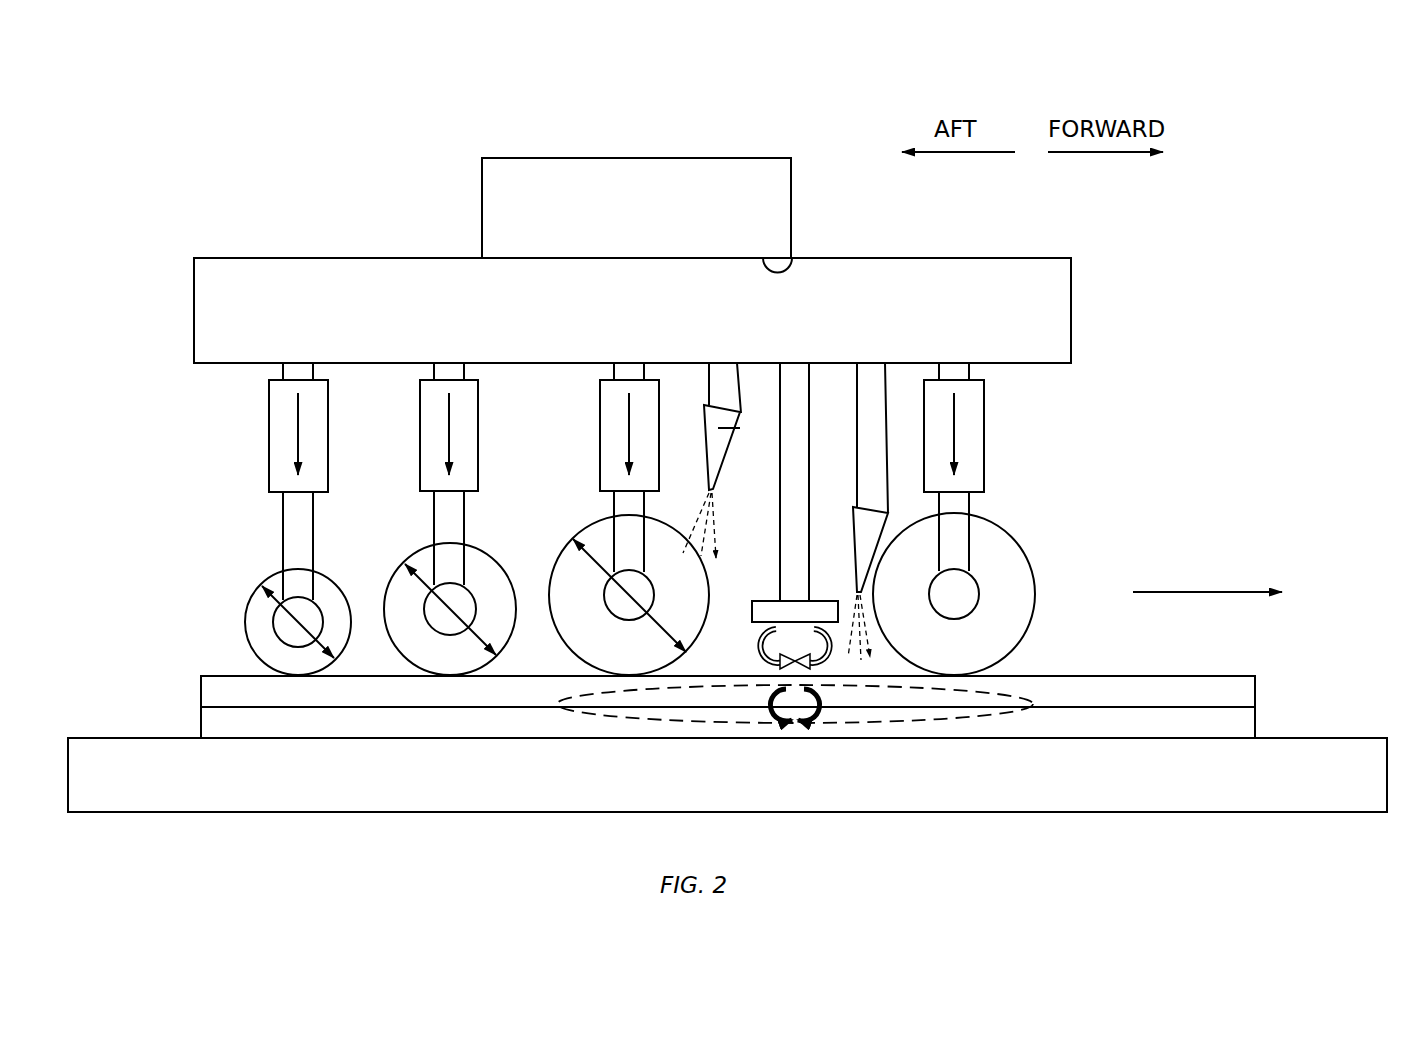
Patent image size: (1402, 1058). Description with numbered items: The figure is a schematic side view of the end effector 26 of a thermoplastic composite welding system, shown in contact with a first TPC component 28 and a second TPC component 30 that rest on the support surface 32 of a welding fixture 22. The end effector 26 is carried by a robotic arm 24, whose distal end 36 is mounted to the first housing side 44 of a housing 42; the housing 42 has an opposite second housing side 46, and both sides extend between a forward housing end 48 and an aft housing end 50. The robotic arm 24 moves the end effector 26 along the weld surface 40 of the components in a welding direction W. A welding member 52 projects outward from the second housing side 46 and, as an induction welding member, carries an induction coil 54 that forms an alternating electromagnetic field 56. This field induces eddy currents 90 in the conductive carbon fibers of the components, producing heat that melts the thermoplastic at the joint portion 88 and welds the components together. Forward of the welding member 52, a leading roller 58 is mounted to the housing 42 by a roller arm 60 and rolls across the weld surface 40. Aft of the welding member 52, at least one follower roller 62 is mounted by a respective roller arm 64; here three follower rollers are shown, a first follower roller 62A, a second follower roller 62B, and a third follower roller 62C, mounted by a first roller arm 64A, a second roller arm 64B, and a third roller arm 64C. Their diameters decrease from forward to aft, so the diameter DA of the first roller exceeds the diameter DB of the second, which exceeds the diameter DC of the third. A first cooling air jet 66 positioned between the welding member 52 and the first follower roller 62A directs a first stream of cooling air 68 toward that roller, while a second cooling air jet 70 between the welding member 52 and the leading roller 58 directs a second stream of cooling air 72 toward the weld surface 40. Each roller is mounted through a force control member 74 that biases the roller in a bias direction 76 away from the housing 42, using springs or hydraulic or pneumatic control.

The welding fixture 22 is at (46, 772).
The robotic arm 24 is at (498, 136).
The end effector 26 is at (663, 289).
The first TPC component 28 is at (777, 668).
The second TPC component 30 is at (1266, 726).
The support surface 32 is at (122, 737).
The distal end 36 is at (796, 266).
The weld surface 40 is at (1050, 675).
The housing 42 is at (652, 289).
The first housing side 44 is at (336, 257).
The second housing side 46 is at (206, 365).
The forward housing end 48 is at (1072, 277).
The aft housing end 50 is at (193, 300).
The welding member 52 is at (818, 408).
The induction coil 54 is at (768, 604).
The electromagnetic field 56 is at (757, 648).
The leading roller 58 is at (1016, 558).
The roller arm 60 is at (958, 540).
The follower roller 62 is at (600, 591).
The first follower roller 62A is at (557, 597).
The second follower roller 62B is at (390, 600).
The third follower roller 62C is at (274, 580).
The roller arm 64 is at (590, 520).
The first roller arm 64A is at (614, 505).
The second roller arm 64B is at (465, 518).
The third roller arm 64C is at (300, 520).
The first cooling air jet 66 is at (740, 417).
The first stream of cooling air 68 is at (694, 513).
The second cooling air jet 70 is at (861, 530).
The second stream of cooling air 72 is at (872, 656).
The force control member 74 is at (322, 402).
The bias direction 76 is at (296, 432).
The joint portion 88 is at (940, 701).
The eddy currents 90 is at (825, 722).
The diameter of the first follower roller DA is at (660, 639).
The diameter of the second follower roller DB is at (468, 648).
The diameter of the third follower roller DC is at (282, 626).
The welding direction W is at (1198, 591).